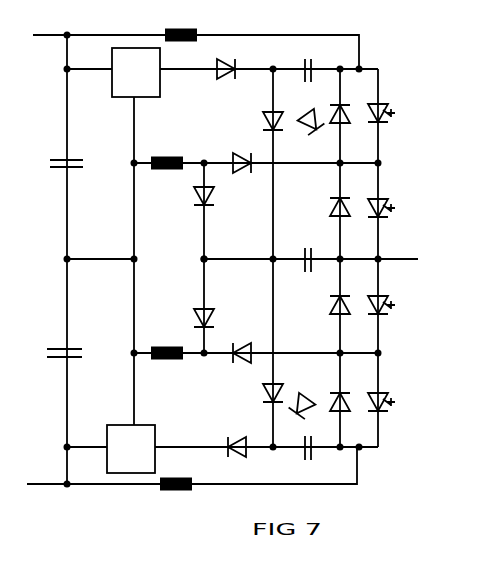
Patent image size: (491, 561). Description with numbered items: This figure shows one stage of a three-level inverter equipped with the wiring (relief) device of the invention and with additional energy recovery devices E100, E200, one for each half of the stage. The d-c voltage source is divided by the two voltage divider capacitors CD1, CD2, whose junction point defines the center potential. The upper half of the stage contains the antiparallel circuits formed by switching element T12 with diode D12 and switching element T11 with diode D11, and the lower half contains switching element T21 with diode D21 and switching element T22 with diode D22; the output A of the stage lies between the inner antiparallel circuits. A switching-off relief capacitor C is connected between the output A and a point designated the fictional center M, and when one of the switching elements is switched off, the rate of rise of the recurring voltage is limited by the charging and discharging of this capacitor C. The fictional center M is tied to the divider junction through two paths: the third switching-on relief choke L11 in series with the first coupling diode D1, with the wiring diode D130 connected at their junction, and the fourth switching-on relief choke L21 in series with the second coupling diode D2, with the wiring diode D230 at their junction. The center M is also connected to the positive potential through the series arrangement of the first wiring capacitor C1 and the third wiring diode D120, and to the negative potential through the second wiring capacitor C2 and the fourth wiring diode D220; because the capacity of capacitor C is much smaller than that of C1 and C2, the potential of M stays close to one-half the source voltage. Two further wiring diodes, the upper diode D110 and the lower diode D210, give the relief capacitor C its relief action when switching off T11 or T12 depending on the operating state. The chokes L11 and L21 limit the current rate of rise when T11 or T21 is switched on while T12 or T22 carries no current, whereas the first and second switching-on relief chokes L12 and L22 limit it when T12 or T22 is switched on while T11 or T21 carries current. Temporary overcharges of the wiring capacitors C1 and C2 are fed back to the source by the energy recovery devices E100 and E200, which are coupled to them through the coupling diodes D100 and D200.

The energy recovery device E100 is at (160, 88).
The energy recovery device E200 is at (155, 435).
The first switching-on relief choke L12 is at (179, 30).
The third switching-on relief choke L11 is at (158, 157).
The fourth switching-on relief choke L21 is at (158, 338).
The second switching-on relief choke L22 is at (190, 478).
The voltage divider capacitor CD1 is at (76, 161).
The voltage divider capacitor CD2 is at (70, 352).
The coupling diode D100 is at (232, 62).
The first wiring capacitor C1 is at (311, 66).
The wiring diode D110 is at (312, 105).
The diode D12 is at (349, 117).
The semiconductor switching element T12 is at (385, 106).
The third wiring diode D120 is at (265, 123).
The first coupling diode D1 is at (240, 153).
The wiring diode D130 is at (214, 205).
The diode D11 is at (348, 208).
The semiconductor switching element T11 is at (385, 200).
The fictional center M is at (203, 260).
The switching-off relief capacitor C is at (311, 256).
The output A is at (402, 259).
The wiring diode D230 is at (213, 312).
The diode D21 is at (348, 306).
The semiconductor switching element T21 is at (385, 298).
The second coupling diode D2 is at (239, 347).
The fourth wiring diode D220 is at (264, 391).
The wiring diode D210 is at (300, 395).
The diode D22 is at (348, 402).
The semiconductor switching element T22 is at (385, 395).
The coupling diode D200 is at (231, 441).
The second wiring capacitor C2 is at (311, 443).